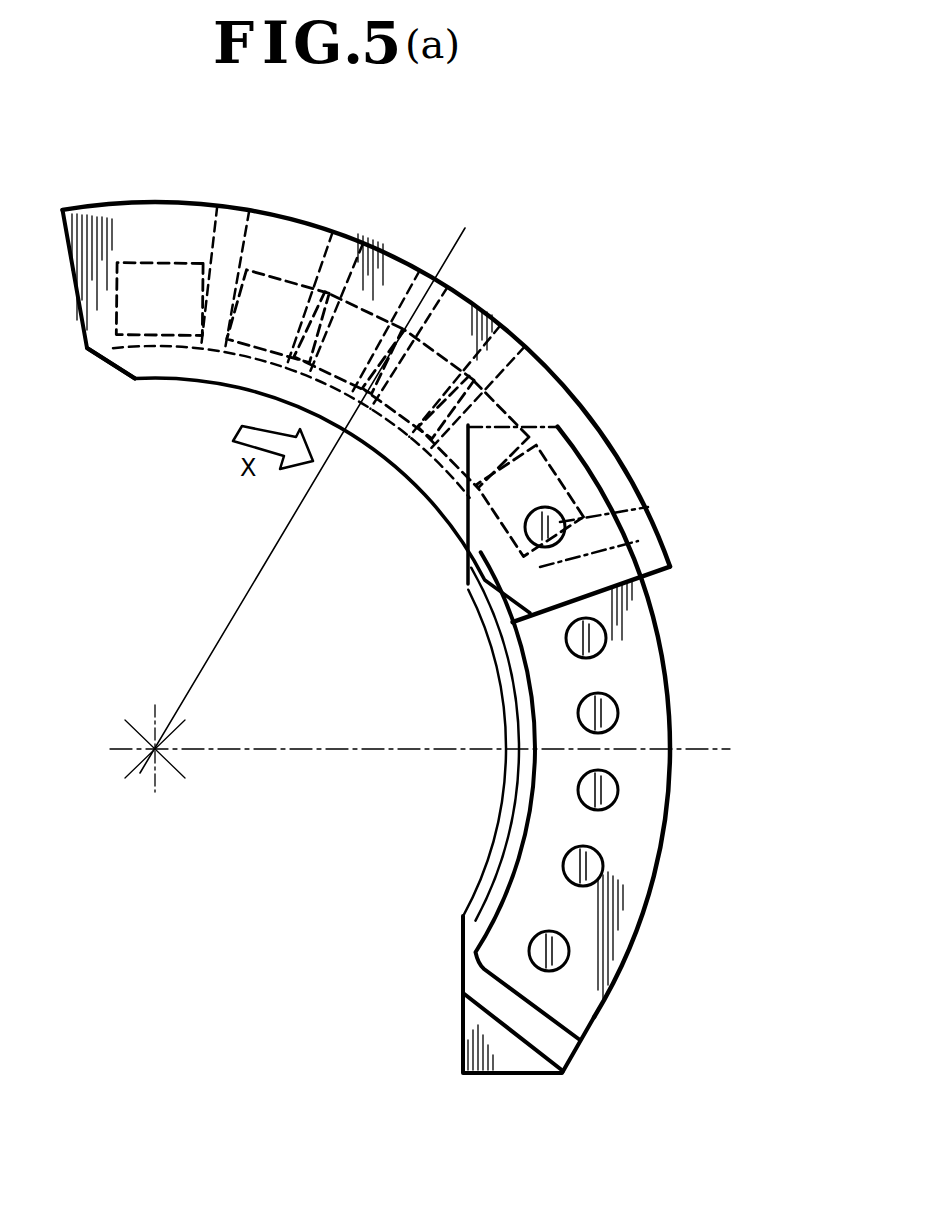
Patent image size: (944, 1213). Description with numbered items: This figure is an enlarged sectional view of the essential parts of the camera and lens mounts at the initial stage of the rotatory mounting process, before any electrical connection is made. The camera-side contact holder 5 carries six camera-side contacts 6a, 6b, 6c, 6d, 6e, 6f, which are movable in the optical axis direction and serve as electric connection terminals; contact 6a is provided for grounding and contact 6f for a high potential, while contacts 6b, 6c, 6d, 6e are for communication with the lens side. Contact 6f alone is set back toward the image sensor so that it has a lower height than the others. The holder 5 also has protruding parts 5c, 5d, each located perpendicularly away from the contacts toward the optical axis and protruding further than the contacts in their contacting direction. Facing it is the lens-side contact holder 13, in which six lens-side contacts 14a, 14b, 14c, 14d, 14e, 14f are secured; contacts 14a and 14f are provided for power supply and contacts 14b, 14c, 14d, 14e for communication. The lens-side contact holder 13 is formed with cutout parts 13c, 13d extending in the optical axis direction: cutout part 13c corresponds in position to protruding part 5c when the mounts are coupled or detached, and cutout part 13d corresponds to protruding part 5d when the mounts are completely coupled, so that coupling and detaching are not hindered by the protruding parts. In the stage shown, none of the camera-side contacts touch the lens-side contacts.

The camera-side contact holder 5 is at (637, 852).
The protruding part 5c is at (517, 810).
The protruding part 5d is at (510, 1012).
The camera-side contact 6a is at (557, 967).
The camera-side contact 6b is at (600, 865).
The camera-side contact 6c is at (608, 790).
The camera-side contact 6d is at (608, 714).
The camera-side contact 6e is at (596, 638).
The camera-side contact 6f is at (556, 522).
The lens-side contact holder 13 is at (505, 343).
The cutout part 13c is at (173, 362).
The cutout part 13d is at (643, 553).
The lens-side contact 14a is at (535, 485).
The lens-side contact 14b is at (487, 410).
The lens-side contact 14c is at (430, 370).
The lens-side contact 14d is at (357, 325).
The lens-side contact 14e is at (268, 290).
The lens-side contact 14f is at (150, 272).